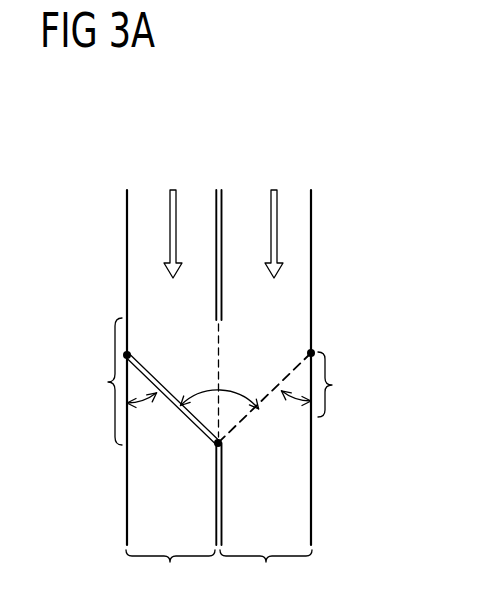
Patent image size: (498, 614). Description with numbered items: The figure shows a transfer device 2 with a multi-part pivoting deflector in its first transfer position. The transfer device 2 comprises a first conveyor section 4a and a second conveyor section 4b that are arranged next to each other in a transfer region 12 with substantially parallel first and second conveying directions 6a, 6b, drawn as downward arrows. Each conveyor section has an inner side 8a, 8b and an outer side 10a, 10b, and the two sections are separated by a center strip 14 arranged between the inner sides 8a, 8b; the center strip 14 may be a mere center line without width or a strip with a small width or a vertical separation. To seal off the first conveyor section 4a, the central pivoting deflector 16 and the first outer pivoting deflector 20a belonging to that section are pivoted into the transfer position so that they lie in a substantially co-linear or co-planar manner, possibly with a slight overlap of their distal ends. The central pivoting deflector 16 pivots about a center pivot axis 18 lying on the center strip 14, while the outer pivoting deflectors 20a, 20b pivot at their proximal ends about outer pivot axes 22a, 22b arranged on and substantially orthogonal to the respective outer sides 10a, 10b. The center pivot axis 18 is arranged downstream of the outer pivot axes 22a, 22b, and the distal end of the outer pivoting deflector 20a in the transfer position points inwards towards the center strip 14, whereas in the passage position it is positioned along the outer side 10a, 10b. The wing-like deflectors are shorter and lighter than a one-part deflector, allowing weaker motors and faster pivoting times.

The transfer device 2 is at (66, 122).
The first conveyor section 4a is at (170, 573).
The second conveyor section 4b is at (266, 573).
The first conveying direction 6a is at (171, 238).
The second conveying direction 6b is at (276, 238).
The first inner side 8a is at (215, 218).
The second inner side 8b is at (222, 236).
The first outer side 10a is at (127, 207).
The second outer side 10b is at (310, 207).
The transfer region 12 is at (90, 371).
The center strip 14 is at (216, 188).
The central pivoting deflector 16 is at (194, 412).
The center pivot axis 18 is at (221, 443).
The first outer pivoting deflector 20a is at (173, 397).
The second outer pivoting deflector 20b is at (328, 384).
The first outer pivot axis 22a is at (130, 352).
The second outer pivot axis 22b is at (308, 351).